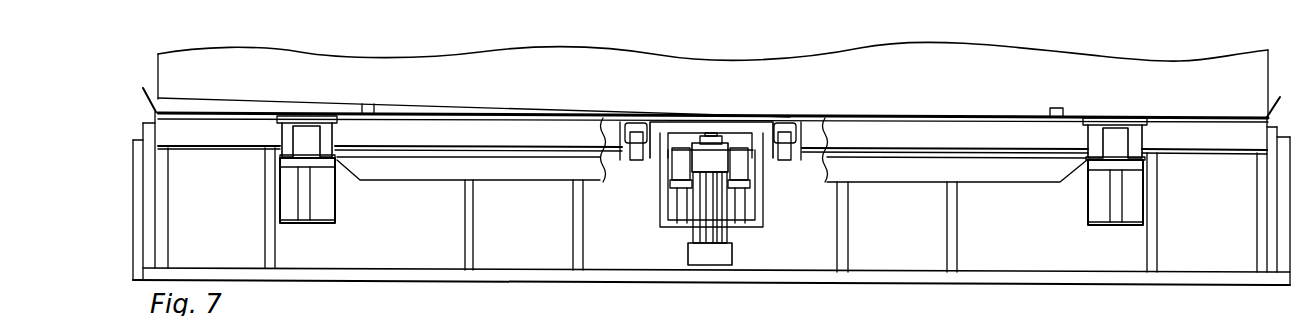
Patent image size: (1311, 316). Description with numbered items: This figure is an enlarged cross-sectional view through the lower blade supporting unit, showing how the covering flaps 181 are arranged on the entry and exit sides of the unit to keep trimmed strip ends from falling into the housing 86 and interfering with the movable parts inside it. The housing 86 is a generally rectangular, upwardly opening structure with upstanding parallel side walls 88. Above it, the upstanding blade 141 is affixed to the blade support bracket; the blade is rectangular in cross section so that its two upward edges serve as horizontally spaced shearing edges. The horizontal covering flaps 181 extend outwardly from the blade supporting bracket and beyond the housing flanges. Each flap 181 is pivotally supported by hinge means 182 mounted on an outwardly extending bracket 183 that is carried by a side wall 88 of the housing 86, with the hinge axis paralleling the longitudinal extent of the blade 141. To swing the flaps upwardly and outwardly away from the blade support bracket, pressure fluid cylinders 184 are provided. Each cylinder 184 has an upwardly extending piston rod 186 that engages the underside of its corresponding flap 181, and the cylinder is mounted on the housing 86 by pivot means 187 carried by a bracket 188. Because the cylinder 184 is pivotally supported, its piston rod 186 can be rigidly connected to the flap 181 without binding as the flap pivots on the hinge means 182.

The upstanding blade 141 is at (892, 72).
The horizontal covering flap 181 is at (936, 115).
The hinge means 182 is at (268, 128).
The outwardly extending bracket 183 is at (320, 199).
The pressure fluid cylinder 184 is at (717, 222).
The piston rod 186 is at (708, 134).
The pivot means 187 is at (682, 164).
The bracket 188 is at (671, 207).
The side wall 88 is at (976, 262).
The housing 86 is at (1062, 285).